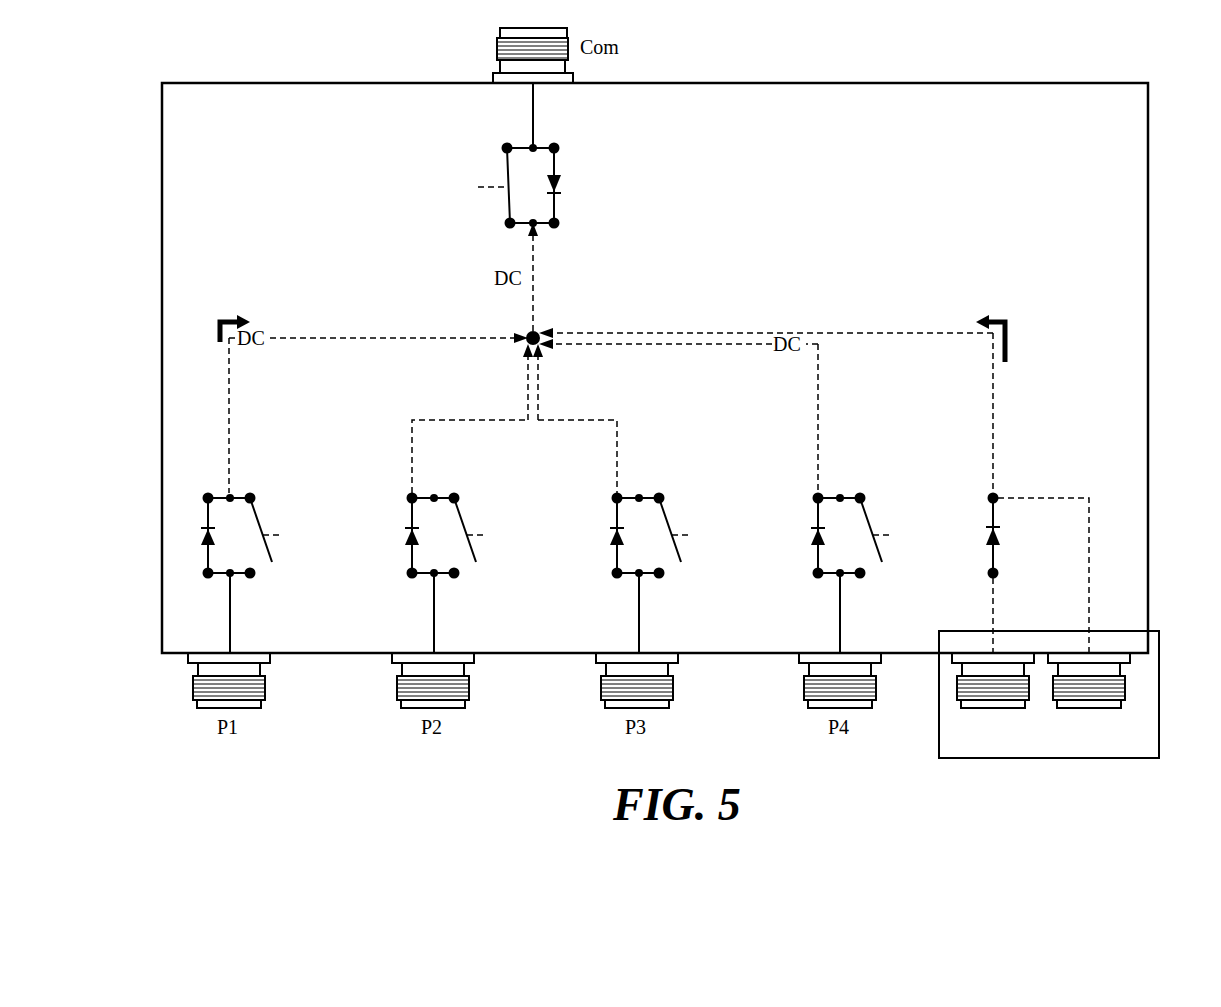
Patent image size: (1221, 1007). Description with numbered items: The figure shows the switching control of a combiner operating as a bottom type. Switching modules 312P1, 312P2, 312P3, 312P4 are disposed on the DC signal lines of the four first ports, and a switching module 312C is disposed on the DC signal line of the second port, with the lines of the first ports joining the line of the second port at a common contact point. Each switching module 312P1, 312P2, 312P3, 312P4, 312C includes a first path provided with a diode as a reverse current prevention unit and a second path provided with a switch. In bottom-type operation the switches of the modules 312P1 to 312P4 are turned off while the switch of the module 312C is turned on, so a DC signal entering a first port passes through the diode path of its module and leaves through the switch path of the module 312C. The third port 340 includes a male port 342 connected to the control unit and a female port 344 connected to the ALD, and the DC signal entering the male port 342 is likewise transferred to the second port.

The switching module 312C is at (507, 170).
The switching module 312P1 is at (265, 478).
The switching module 312P2 is at (469, 478).
The switching module 312P3 is at (674, 478).
The switching module 312P4 is at (875, 478).
The third port 340 is at (1160, 692).
The male port 342 is at (958, 685).
The female port 344 is at (1125, 683).